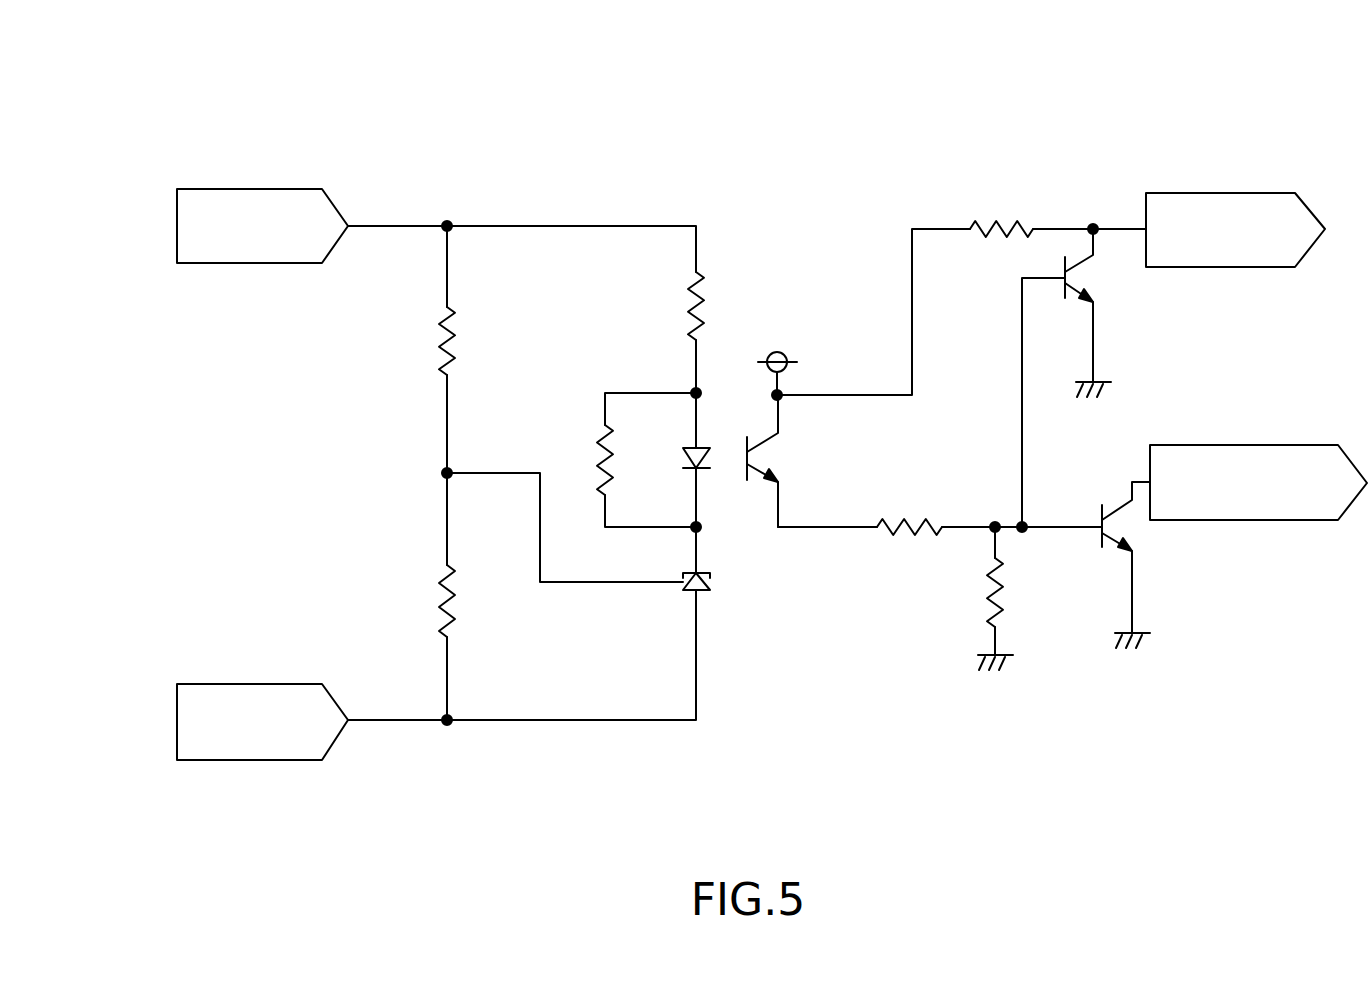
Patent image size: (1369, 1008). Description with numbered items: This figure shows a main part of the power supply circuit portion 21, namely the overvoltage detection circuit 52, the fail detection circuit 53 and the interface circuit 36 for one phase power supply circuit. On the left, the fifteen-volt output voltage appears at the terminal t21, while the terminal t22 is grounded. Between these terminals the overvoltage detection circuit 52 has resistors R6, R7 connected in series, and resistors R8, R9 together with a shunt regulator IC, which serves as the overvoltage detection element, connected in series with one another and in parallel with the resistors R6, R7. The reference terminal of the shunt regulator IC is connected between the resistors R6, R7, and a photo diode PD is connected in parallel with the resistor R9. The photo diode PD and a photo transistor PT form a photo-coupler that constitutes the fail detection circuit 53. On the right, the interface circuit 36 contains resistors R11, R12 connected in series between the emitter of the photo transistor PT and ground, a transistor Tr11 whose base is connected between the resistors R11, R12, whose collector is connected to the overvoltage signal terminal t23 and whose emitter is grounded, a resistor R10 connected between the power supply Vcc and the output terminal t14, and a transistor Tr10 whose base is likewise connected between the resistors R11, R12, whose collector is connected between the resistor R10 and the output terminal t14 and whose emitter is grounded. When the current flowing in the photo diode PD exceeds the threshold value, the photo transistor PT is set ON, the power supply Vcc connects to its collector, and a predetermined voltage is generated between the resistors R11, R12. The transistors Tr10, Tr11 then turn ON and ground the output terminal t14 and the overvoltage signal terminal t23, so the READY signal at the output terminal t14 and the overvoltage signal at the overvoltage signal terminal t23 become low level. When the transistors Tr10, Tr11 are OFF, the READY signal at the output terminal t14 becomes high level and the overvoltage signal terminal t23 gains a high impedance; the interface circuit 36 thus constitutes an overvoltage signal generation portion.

The terminal t21 is at (258, 189).
The terminal t22 is at (258, 684).
The output terminal t14 is at (1241, 193).
The overvoltage signal terminal t23 is at (1287, 445).
The overvoltage detection circuit 52 is at (547, 390).
The fail detection circuit 53 is at (759, 522).
The power supply circuit portion 21 is at (862, 278).
The interface circuit 36 is at (1041, 344).
The resistor R6 is at (469, 341).
The resistor R7 is at (469, 601).
The resistor R8 is at (717, 306).
The resistor R9 is at (646, 460).
The resistor R10 is at (1001, 213).
The resistor R11 is at (909, 511).
The resistor R12 is at (1018, 598).
The photo-diode PD is at (711, 460).
The photo-transistor PT is at (782, 461).
The shunt regulator IC is at (681, 576).
The transistor Tr10 is at (1116, 313).
The transistor Tr11 is at (1154, 565).
The power supply Vcc is at (777, 358).